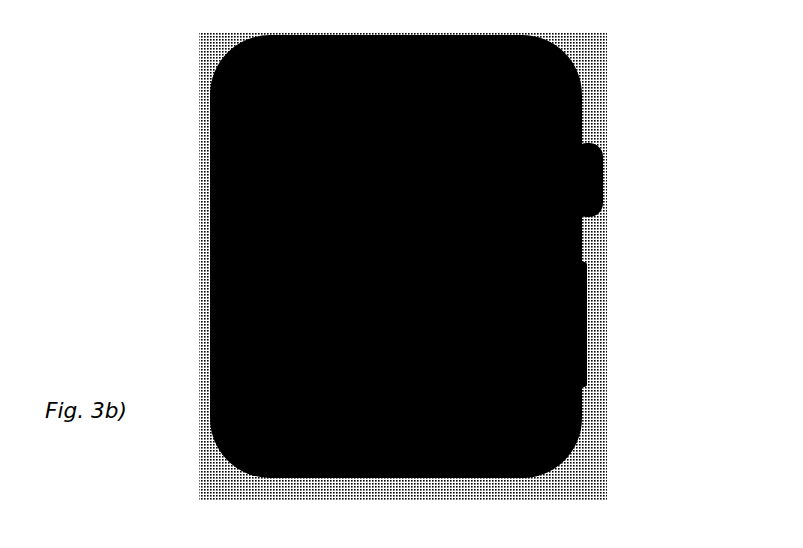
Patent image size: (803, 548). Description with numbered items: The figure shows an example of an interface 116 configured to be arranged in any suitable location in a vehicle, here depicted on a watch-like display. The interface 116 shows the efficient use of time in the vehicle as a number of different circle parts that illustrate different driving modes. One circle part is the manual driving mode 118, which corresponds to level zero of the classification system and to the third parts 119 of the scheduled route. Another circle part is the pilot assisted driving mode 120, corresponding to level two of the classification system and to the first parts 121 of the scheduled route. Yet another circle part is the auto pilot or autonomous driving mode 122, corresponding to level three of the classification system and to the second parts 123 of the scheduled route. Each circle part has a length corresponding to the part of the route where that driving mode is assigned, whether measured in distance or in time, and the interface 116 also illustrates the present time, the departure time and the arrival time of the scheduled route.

The interface 116 is at (237, 193).
The manual driving mode 118 is at (265, 151).
The third parts of the scheduled route 119 is at (297, 193).
The pilot assisted driving mode 120 is at (636, 343).
The first parts of the scheduled route 121 is at (493, 372).
The auto pilot or autonomous driving mode 122 is at (298, 407).
The second parts of the scheduled route 123 is at (343, 365).